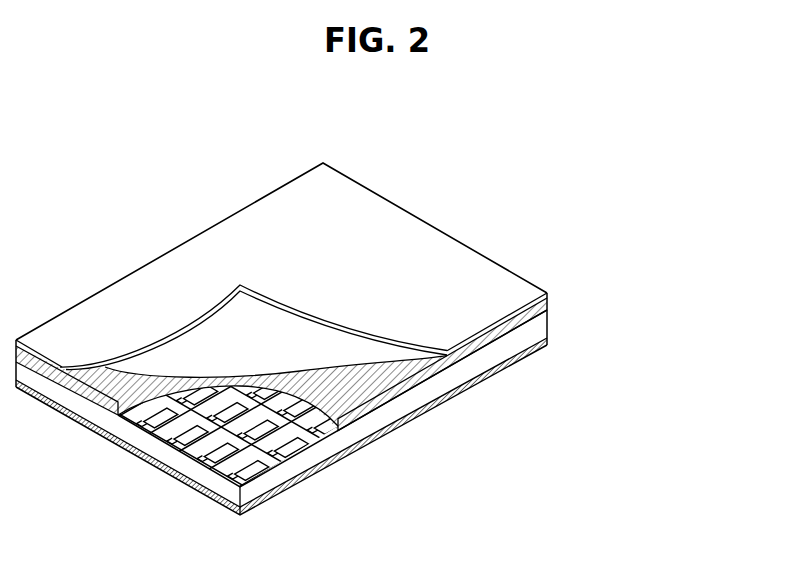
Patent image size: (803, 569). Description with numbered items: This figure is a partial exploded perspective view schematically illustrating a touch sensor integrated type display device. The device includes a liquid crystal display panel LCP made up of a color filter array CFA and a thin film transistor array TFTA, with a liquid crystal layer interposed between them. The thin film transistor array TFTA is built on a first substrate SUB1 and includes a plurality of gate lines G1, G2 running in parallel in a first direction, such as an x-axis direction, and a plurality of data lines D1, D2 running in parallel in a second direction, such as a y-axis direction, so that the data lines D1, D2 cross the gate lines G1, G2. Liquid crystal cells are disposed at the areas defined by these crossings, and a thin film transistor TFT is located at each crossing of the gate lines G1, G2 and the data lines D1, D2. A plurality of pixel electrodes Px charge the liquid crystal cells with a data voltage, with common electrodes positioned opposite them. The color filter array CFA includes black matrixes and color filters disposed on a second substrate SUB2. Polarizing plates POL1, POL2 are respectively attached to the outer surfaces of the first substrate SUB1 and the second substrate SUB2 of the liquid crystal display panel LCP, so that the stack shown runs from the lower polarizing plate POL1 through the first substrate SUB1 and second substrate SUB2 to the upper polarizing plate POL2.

The polarizing plate POL2 is at (549, 294).
The second substrate SUB2 is at (549, 303).
The first substrate SUB1 is at (320, 423).
The polarizing plate POL1 is at (549, 341).
The color filter array CFA is at (350, 297).
The thin film transistor array TFTA is at (356, 423).
The liquid crystal display panel LCP is at (380, 349).
The thin film transistor TFT is at (147, 440).
The data line D1 is at (203, 470).
The data line D2 is at (180, 450).
The pixel electrode Px is at (236, 484).
The gate line G1 is at (295, 472).
The gate line G2 is at (337, 454).